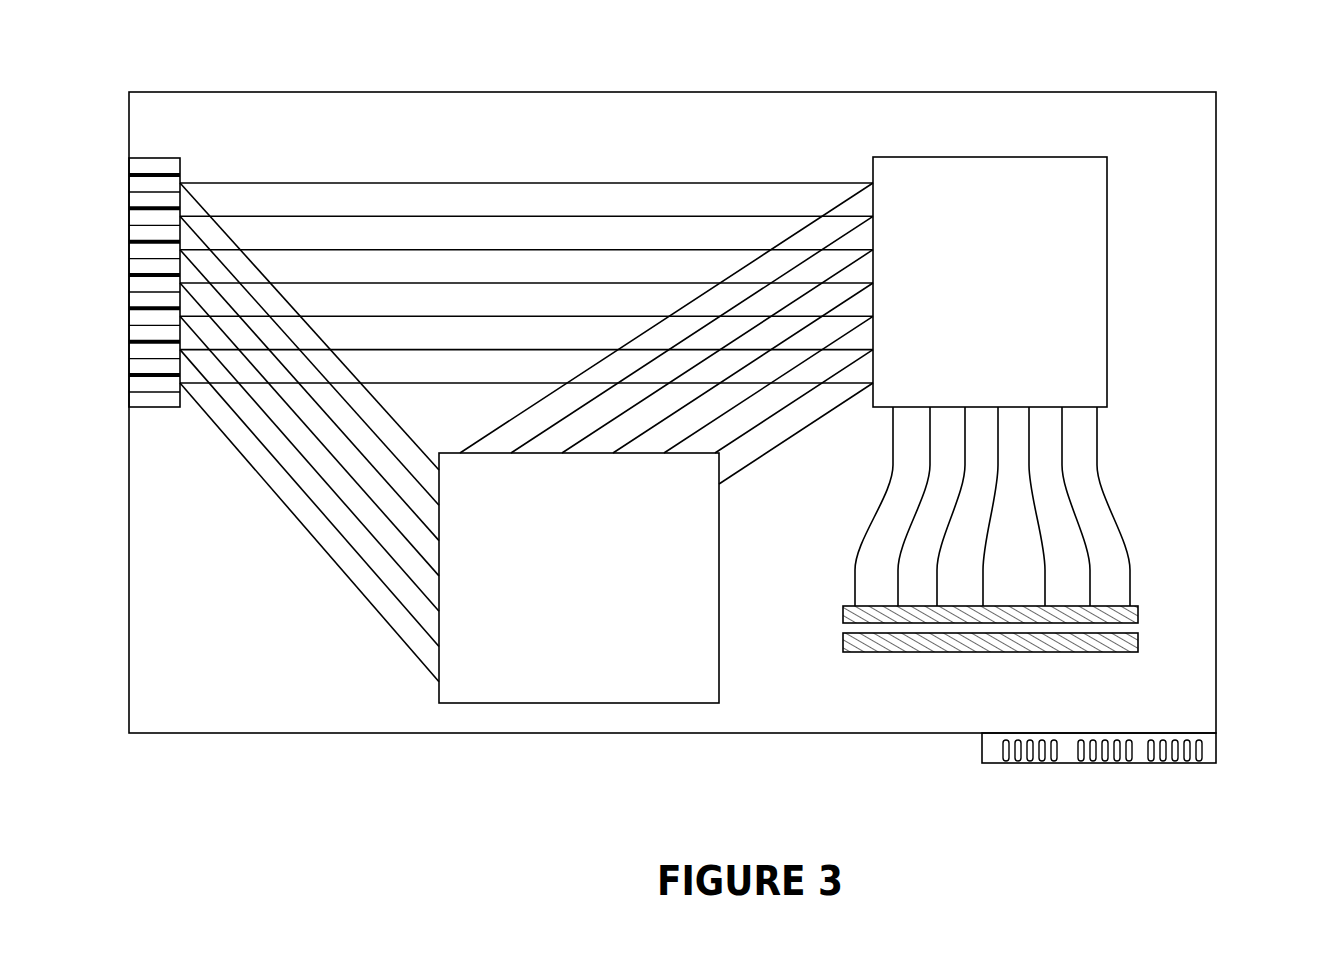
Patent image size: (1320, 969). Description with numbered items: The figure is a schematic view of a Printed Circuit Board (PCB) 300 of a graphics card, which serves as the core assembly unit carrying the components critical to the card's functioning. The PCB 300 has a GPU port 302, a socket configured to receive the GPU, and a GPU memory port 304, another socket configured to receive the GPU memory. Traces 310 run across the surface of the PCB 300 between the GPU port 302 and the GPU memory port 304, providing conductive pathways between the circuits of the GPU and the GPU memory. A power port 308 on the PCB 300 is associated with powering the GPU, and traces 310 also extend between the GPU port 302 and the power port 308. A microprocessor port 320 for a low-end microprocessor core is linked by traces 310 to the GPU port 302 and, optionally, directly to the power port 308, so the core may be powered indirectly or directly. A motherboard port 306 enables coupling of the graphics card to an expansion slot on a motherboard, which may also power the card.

The Printed Circuit Board (PCB) 300 is at (707, 115).
The GPU port 302 is at (1003, 301).
The GPU memory port 304 is at (1137, 605).
The motherboard port 306 is at (1138, 757).
The power port 308 is at (143, 167).
The traces 310 is at (407, 182).
The microprocessor port 320 is at (593, 598).